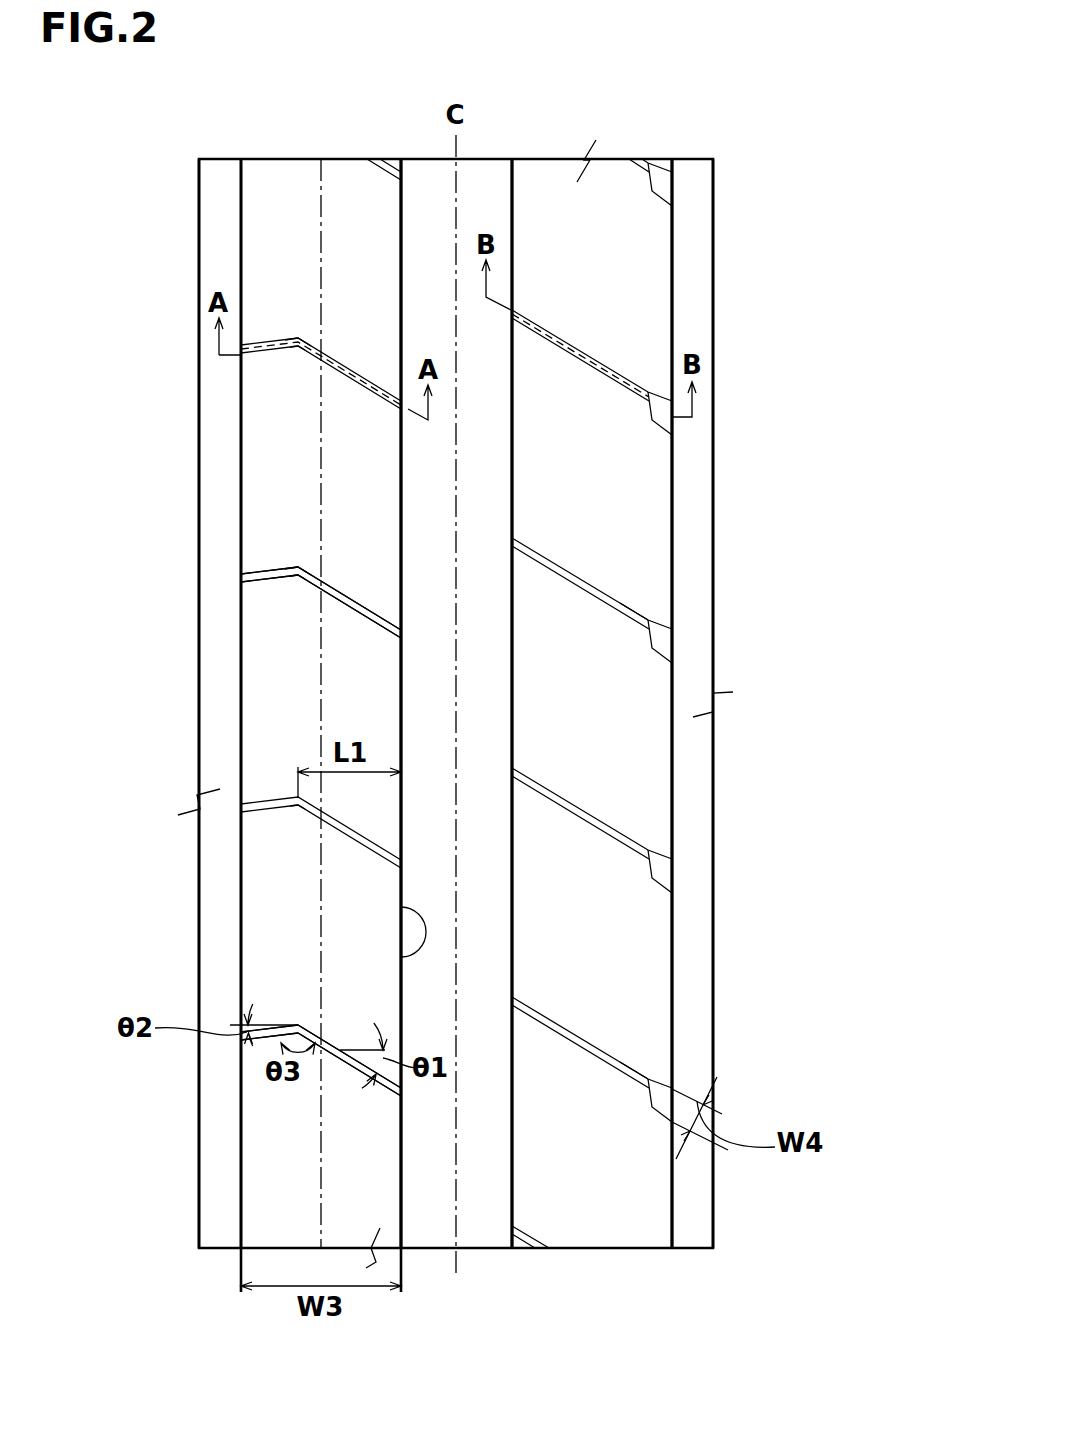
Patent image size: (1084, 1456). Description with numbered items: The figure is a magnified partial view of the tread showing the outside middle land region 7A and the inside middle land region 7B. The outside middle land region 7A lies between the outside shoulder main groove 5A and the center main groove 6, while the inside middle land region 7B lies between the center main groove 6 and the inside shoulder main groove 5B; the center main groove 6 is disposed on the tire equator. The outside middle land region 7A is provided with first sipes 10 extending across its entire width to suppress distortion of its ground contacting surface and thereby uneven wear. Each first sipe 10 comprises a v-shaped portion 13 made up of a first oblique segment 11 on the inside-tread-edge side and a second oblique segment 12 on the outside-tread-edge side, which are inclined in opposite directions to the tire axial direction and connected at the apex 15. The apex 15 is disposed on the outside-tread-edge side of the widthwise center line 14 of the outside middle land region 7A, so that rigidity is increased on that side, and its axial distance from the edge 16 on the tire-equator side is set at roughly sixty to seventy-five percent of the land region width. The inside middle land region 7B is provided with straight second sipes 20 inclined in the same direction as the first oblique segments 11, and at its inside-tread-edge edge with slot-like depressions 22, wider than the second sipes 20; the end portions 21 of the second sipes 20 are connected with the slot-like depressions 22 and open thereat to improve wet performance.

The outside shoulder main groove 5A is at (223, 196).
The inside shoulder main groove 5B is at (696, 221).
The center main groove 6 is at (487, 1212).
The outside middle land region 7A is at (353, 201).
The inside middle land region 7B is at (565, 227).
The first sipe 10 is at (340, 372).
The first oblique segment 11 is at (365, 615).
The second oblique segment 12 is at (270, 577).
The v-shaped portion 13 is at (287, 326).
The widthwise center line 14 is at (320, 188).
The apex 15 is at (302, 326).
The edge 16 is at (400, 957).
The second sipe 20 is at (597, 344).
The end portion 21 is at (637, 598).
The slot-like depression 22 is at (674, 410).